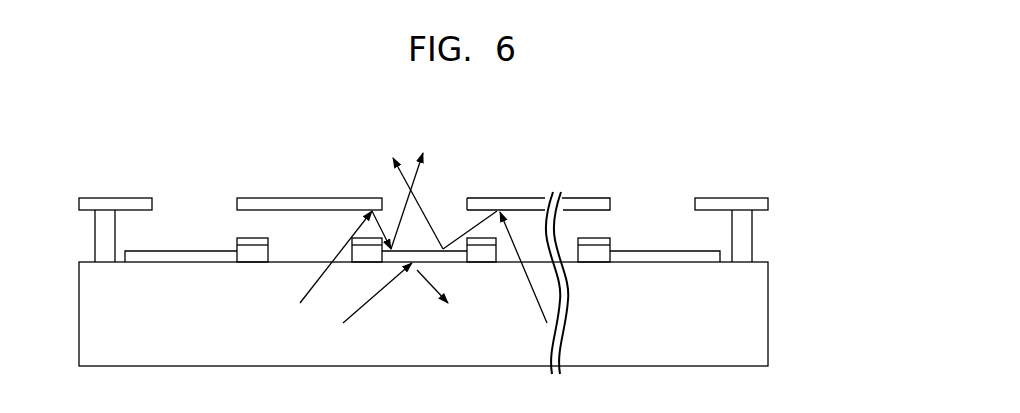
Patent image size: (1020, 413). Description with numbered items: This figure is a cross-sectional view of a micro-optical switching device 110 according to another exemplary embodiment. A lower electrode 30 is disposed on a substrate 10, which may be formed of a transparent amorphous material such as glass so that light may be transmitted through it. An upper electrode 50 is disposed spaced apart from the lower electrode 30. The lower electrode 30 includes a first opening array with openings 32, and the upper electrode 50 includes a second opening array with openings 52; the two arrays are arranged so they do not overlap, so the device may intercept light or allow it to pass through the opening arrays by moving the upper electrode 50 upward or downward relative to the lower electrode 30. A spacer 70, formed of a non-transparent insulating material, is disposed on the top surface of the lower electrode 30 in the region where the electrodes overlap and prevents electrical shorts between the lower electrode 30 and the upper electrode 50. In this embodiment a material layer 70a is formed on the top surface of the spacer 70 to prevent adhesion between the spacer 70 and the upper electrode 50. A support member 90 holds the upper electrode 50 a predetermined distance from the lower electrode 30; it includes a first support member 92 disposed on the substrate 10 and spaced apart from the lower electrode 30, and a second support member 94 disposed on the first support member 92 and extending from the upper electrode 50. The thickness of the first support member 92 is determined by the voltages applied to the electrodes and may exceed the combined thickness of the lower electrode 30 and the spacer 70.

The substrate 10 is at (767, 313).
The lower electrode 30 is at (660, 251).
The openings 32 is at (312, 248).
The upper electrode 50 is at (512, 198).
The openings 52 is at (198, 205).
The spacer 70 is at (593, 238).
The material layer 70a is at (610, 239).
The support member 90 is at (475, 227).
The first support member 92 is at (752, 238).
The second support member 94 is at (768, 204).
The micro-optical switching device 110 is at (815, 132).